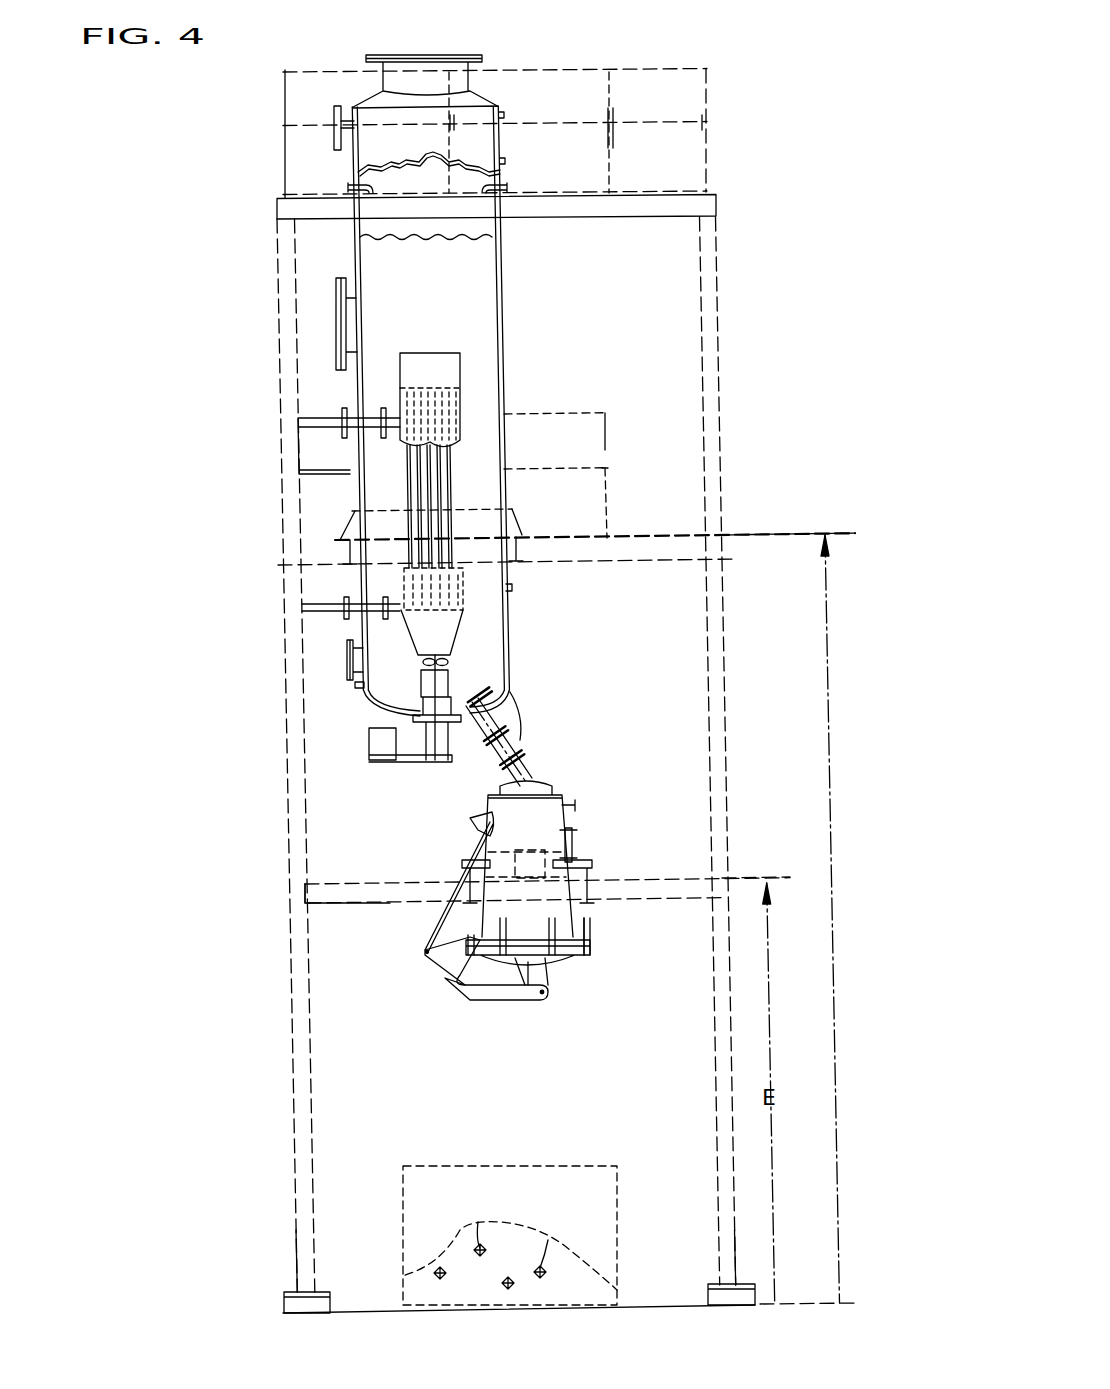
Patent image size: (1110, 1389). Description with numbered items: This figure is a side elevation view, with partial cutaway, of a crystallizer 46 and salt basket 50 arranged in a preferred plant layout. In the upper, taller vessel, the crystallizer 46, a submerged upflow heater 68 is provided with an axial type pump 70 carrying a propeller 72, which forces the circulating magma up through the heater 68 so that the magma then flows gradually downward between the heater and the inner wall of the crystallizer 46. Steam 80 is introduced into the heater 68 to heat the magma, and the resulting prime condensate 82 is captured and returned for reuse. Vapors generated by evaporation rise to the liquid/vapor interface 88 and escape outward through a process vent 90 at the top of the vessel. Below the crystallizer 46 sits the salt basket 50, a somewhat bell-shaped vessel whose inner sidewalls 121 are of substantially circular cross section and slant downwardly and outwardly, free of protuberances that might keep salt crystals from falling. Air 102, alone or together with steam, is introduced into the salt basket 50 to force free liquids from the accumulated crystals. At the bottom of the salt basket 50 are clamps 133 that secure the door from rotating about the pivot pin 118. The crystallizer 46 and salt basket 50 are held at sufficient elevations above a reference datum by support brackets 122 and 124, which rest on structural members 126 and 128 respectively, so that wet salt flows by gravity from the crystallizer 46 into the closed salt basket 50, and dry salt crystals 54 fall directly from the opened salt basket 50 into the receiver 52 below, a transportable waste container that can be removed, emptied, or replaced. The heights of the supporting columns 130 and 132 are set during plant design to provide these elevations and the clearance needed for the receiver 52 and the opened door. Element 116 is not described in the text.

The crystallizer 46 is at (355, 230).
The salt basket 50 is at (500, 892).
The receiver 52 is at (560, 1166).
The dry salt crystals 54 is at (478, 1222).
The submerged upflow heater 68 is at (460, 410).
The axial type pump 70 is at (268, 776).
The propeller 72 is at (448, 662).
The steam 80 is at (300, 422).
The prime condensate 82 is at (307, 603).
The liquid/vapor interface 88 is at (497, 237).
The process vent 90 is at (335, 138).
The air 102 is at (515, 970).
The lever arm 116 is at (500, 993).
The pivot pin 118 is at (452, 965).
The inner sidewalls 121 is at (487, 823).
The support bracket 122 is at (350, 520).
The support bracket 124 is at (585, 870).
The structural member 126 is at (688, 546).
The structural member 128 is at (328, 903).
The column 130 is at (297, 1220).
The column 132 is at (722, 1226).
The clamps 133 is at (590, 945).